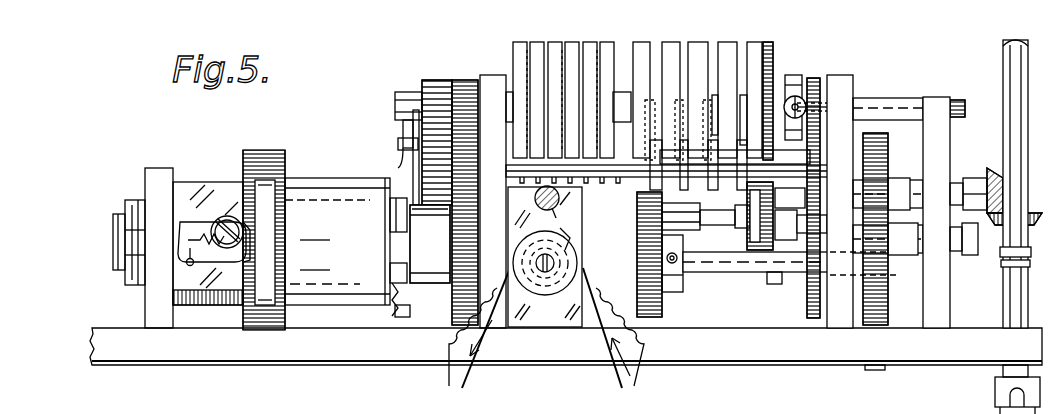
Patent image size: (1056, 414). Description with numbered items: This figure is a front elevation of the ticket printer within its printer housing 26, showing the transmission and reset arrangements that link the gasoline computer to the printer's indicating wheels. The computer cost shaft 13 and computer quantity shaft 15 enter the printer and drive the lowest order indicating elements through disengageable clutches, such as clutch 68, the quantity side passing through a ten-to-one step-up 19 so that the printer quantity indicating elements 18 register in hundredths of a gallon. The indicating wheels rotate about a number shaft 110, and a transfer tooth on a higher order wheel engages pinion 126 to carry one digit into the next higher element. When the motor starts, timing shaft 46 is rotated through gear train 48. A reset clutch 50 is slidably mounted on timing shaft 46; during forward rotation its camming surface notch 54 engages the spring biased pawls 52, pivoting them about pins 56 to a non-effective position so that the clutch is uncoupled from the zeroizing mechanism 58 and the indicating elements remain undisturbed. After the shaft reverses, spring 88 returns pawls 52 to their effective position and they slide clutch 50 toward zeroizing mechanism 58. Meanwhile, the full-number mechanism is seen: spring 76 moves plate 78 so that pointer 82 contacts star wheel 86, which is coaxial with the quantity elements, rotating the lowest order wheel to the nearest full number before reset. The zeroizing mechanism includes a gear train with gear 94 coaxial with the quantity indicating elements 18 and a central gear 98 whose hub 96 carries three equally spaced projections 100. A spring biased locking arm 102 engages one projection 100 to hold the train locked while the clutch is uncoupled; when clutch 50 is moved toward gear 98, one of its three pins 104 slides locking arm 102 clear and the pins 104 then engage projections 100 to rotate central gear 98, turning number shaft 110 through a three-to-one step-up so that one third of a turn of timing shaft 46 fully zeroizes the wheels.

The computer cost shaft 13 is at (557, 207).
The computer quantity shaft 15 is at (548, 275).
The quantity indicating elements 18 is at (730, 45).
The ten-to-one step-up 19 is at (522, 42).
The printer housing 26 is at (935, 330).
The timing shaft 46 is at (113, 246).
The gear train 48 is at (886, 262).
The reset clutch 50 is at (356, 186).
The pawls 52 is at (182, 224).
The notch 54 is at (246, 222).
The pins 56 is at (228, 218).
The zeroizing mechanism 58 is at (392, 132).
The disengageable clutch 68 is at (750, 232).
The spring 76 is at (853, 80).
The plate 78 is at (821, 140).
The pointer 82 is at (806, 78).
The star wheel 86 is at (800, 96).
The spring 88 is at (200, 240).
The gear 94 is at (463, 92).
The hub 96 is at (430, 244).
The central gear 98 is at (462, 249).
The projections 100 is at (434, 212).
The locking arm 102 is at (414, 180).
The pins 104 is at (390, 213).
The number shaft 110 is at (630, 75).
The pinion 126 is at (640, 182).